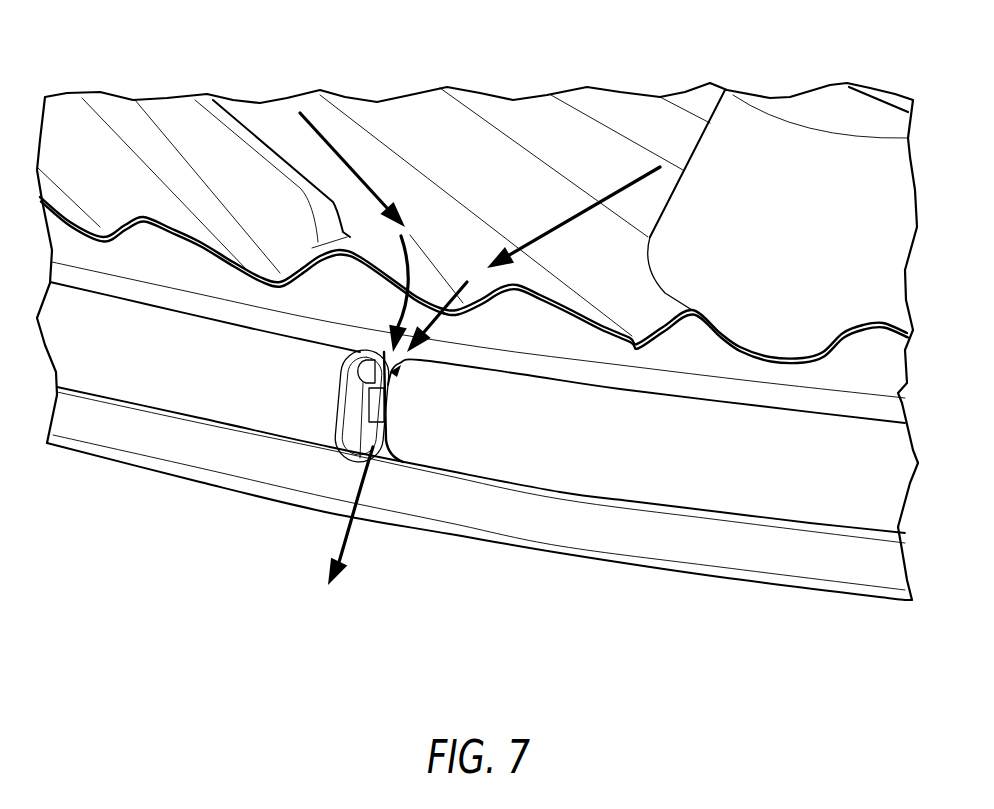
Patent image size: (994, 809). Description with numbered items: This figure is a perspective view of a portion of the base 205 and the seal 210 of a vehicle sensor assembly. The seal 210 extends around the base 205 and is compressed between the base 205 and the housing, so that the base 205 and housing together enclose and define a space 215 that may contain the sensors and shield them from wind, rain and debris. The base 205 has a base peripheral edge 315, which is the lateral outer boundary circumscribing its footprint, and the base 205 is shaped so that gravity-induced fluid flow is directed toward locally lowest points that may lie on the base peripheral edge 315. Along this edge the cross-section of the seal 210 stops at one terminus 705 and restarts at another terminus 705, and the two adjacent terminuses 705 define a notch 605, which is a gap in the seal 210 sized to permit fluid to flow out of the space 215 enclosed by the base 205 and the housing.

The base 205 is at (818, 215).
The seal 210 is at (192, 385).
The space 215 is at (138, 155).
The base peripheral edge 315 is at (853, 405).
The notch 605 is at (376, 432).
The terminus 705 is at (362, 375).